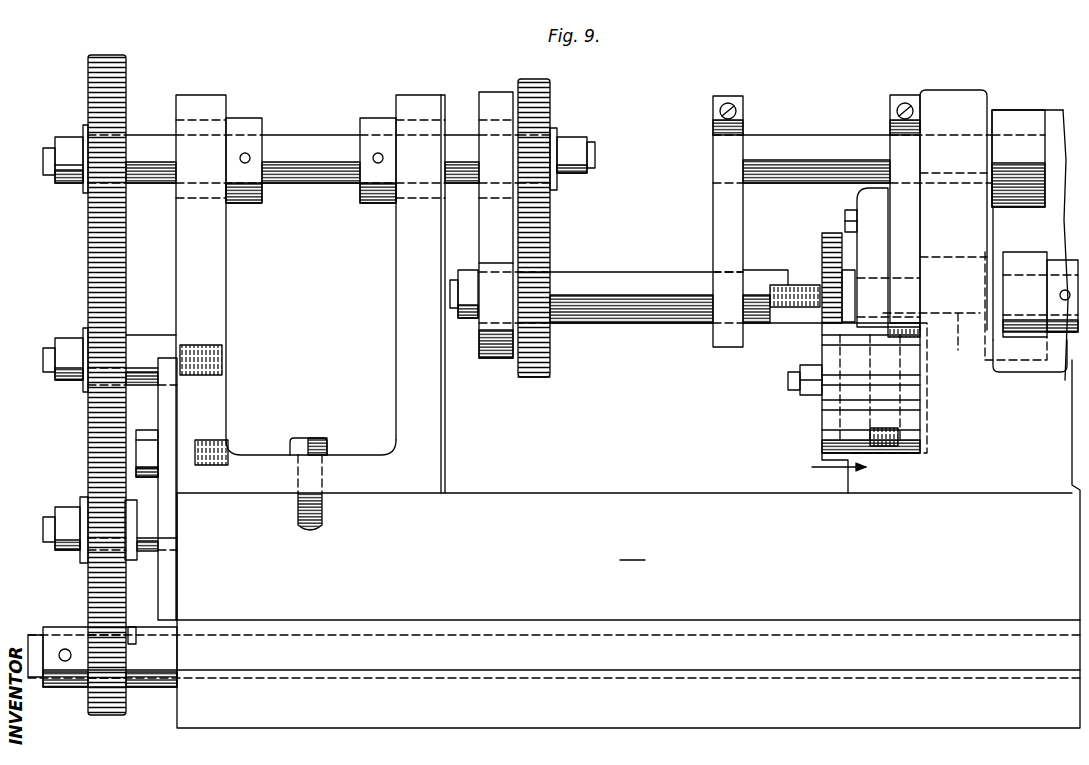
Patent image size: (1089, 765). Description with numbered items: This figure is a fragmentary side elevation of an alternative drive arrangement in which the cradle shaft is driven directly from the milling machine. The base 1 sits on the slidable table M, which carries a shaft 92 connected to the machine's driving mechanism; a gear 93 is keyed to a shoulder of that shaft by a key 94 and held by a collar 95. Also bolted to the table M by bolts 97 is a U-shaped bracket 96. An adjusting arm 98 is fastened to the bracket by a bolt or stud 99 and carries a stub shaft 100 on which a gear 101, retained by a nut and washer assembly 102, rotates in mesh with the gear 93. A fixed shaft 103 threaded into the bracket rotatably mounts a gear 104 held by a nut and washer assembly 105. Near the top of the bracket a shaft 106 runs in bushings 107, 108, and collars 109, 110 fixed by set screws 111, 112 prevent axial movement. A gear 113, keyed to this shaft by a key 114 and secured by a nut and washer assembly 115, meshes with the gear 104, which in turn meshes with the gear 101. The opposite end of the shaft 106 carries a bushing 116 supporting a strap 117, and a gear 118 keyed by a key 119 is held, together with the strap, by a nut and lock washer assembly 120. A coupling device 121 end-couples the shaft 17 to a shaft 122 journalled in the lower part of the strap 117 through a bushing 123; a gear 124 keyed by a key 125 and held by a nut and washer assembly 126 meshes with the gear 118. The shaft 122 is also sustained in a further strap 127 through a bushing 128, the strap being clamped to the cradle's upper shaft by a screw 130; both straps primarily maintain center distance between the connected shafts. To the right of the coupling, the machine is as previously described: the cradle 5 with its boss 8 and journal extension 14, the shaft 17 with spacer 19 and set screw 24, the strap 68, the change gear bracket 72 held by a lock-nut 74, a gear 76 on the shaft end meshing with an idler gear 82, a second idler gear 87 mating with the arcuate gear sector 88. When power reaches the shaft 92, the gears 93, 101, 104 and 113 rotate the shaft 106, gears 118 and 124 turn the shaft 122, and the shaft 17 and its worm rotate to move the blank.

The base 1 is at (831, 469).
The cradle 5 is at (1028, 229).
The ring-like boss or extension 8 is at (1017, 115).
The journal extension 14 is at (1030, 360).
The shaft 17 is at (965, 309).
The spacer 19 is at (818, 136).
The set screw 24 is at (1042, 262).
The strap 68 is at (905, 103).
The change gear bracket 72 is at (866, 200).
The lock-nut 74 is at (856, 281).
The gear 76 is at (849, 272).
The gear 82 is at (832, 233).
The gear 87 is at (826, 432).
The arcuate gear sector 88 is at (830, 328).
The shaft 92 is at (342, 625).
The gear 93 is at (95, 612).
The key 94 is at (132, 630).
The collar 95 is at (67, 690).
The U-shaped bracket 96 is at (222, 408).
The bolt 97 is at (318, 438).
The adjusting arm 98 is at (165, 504).
The bolt or stud 99 is at (150, 448).
The stub shaft 100 is at (143, 552).
The gear 101 is at (90, 470).
The nut and washer assembly 102 is at (68, 494).
The fixed shaft 103 is at (146, 335).
The gear 104 is at (88, 288).
The nut and washer assembly 105 is at (70, 318).
The shaft 106 is at (300, 186).
The bushing 107 is at (203, 118).
The bushing 108 is at (412, 118).
The collar 109 is at (237, 203).
The collar 110 is at (375, 203).
The set screw 111 is at (249, 154).
The set screw 112 is at (373, 155).
The gear 113 is at (124, 88).
The key 114 is at (104, 130).
The nut and washer assembly 115 is at (58, 142).
The bushing 116 is at (483, 120).
The strap 117 is at (500, 92).
The gear 118 is at (551, 90).
The key 119 is at (536, 135).
The nut and lock washer assembly 120 is at (593, 156).
The coupling device 121 is at (790, 285).
The shaft 122 is at (608, 323).
The bushing 123 is at (495, 360).
The gear 124 is at (541, 378).
The key 125 is at (540, 272).
The nut and washer assembly 126 is at (458, 270).
The strap 127 is at (713, 197).
The bushing 128 is at (726, 272).
The screw 130 is at (731, 104).
The sliding table M is at (628, 544).